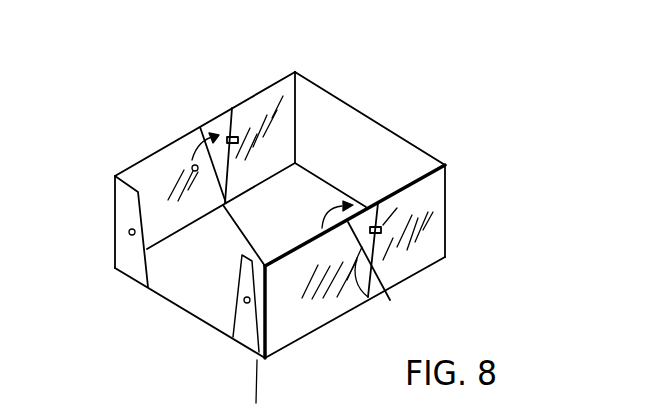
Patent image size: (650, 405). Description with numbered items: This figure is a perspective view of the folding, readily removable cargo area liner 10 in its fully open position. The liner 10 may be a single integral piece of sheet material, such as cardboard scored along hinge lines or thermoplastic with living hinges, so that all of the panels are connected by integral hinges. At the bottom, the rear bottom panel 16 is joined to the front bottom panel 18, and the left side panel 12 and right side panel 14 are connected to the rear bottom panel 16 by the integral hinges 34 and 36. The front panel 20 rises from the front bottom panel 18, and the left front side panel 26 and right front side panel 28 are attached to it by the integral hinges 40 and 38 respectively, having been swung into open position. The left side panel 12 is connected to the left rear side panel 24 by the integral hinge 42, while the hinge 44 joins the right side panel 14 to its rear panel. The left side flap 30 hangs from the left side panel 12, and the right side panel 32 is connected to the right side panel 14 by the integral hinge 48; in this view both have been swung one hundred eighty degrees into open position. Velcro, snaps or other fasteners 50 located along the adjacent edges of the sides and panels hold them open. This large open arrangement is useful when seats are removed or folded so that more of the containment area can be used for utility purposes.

The cargo area liner 10 is at (362, 67).
The left side panel 12 is at (172, 142).
The right side panel 14 is at (297, 327).
The rear bottom panel 16 is at (167, 302).
The front bottom panel 18 is at (298, 208).
The front panel 20 is at (368, 113).
The left rear side panel 24 is at (130, 268).
The left front side panel 26 is at (268, 97).
The right front side panel 28 is at (433, 188).
The left side flap 30 is at (225, 123).
The right side panel 32 is at (362, 262).
The integral hinge 34 is at (197, 222).
The integral hinge 36 is at (337, 320).
The integral hinge 38 is at (448, 213).
The integral hinge 40 is at (295, 123).
The integral hinge 42 is at (115, 226).
The hinge 44 is at (260, 323).
The integral hinge 48 is at (370, 272).
The fasteners 50 is at (238, 141).